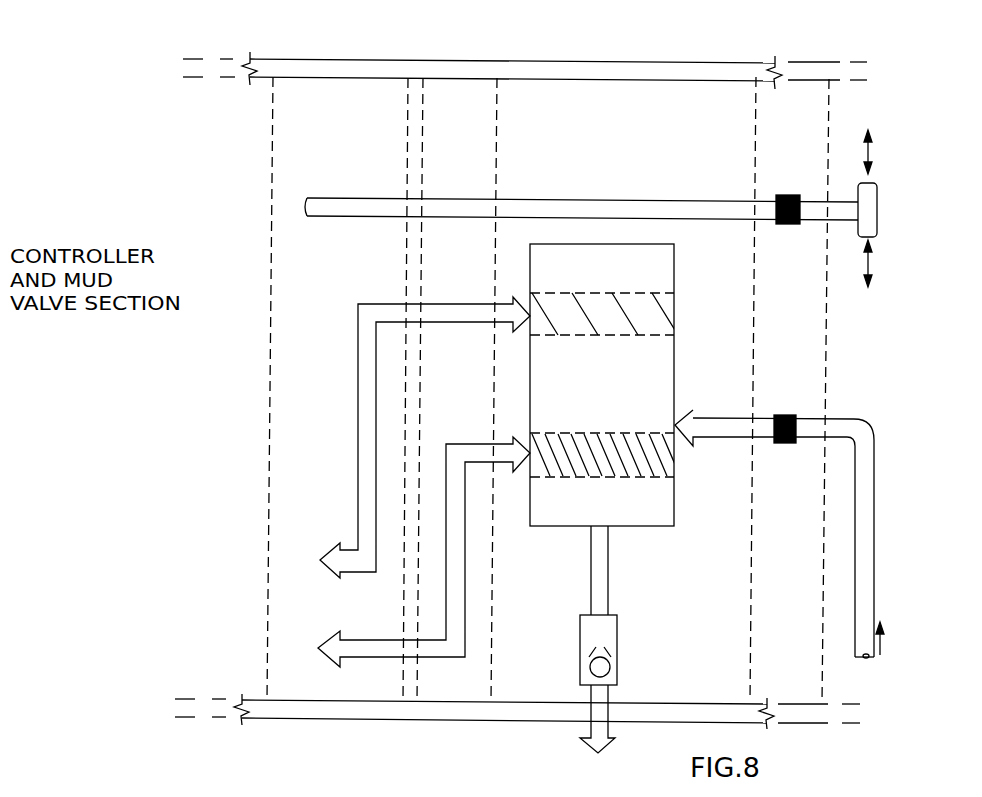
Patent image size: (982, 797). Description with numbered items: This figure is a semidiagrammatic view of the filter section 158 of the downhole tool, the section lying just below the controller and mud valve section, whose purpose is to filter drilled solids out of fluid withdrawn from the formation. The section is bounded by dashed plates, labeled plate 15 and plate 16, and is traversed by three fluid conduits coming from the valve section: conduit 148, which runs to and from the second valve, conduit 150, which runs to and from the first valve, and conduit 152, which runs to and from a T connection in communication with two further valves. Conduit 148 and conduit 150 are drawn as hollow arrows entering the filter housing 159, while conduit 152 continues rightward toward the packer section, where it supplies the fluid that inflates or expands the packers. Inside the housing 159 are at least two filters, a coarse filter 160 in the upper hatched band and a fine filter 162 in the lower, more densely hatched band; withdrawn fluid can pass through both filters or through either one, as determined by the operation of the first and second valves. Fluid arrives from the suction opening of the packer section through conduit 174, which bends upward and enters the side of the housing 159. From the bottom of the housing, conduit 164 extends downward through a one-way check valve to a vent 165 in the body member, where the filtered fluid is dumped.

The filter section 158 is at (660, 56).
The plate 15 is at (337, 389).
The plate 16 is at (457, 389).
The conduit 152 is at (376, 198).
The housing 159 is at (676, 362).
The coarse filter 160 is at (668, 303).
The fine filter 162 is at (670, 473).
The conduit 150 is at (338, 546).
The conduit 148 is at (380, 638).
The conduit 174 is at (835, 421).
The conduit 164 is at (609, 573).
The vent 165 is at (588, 722).